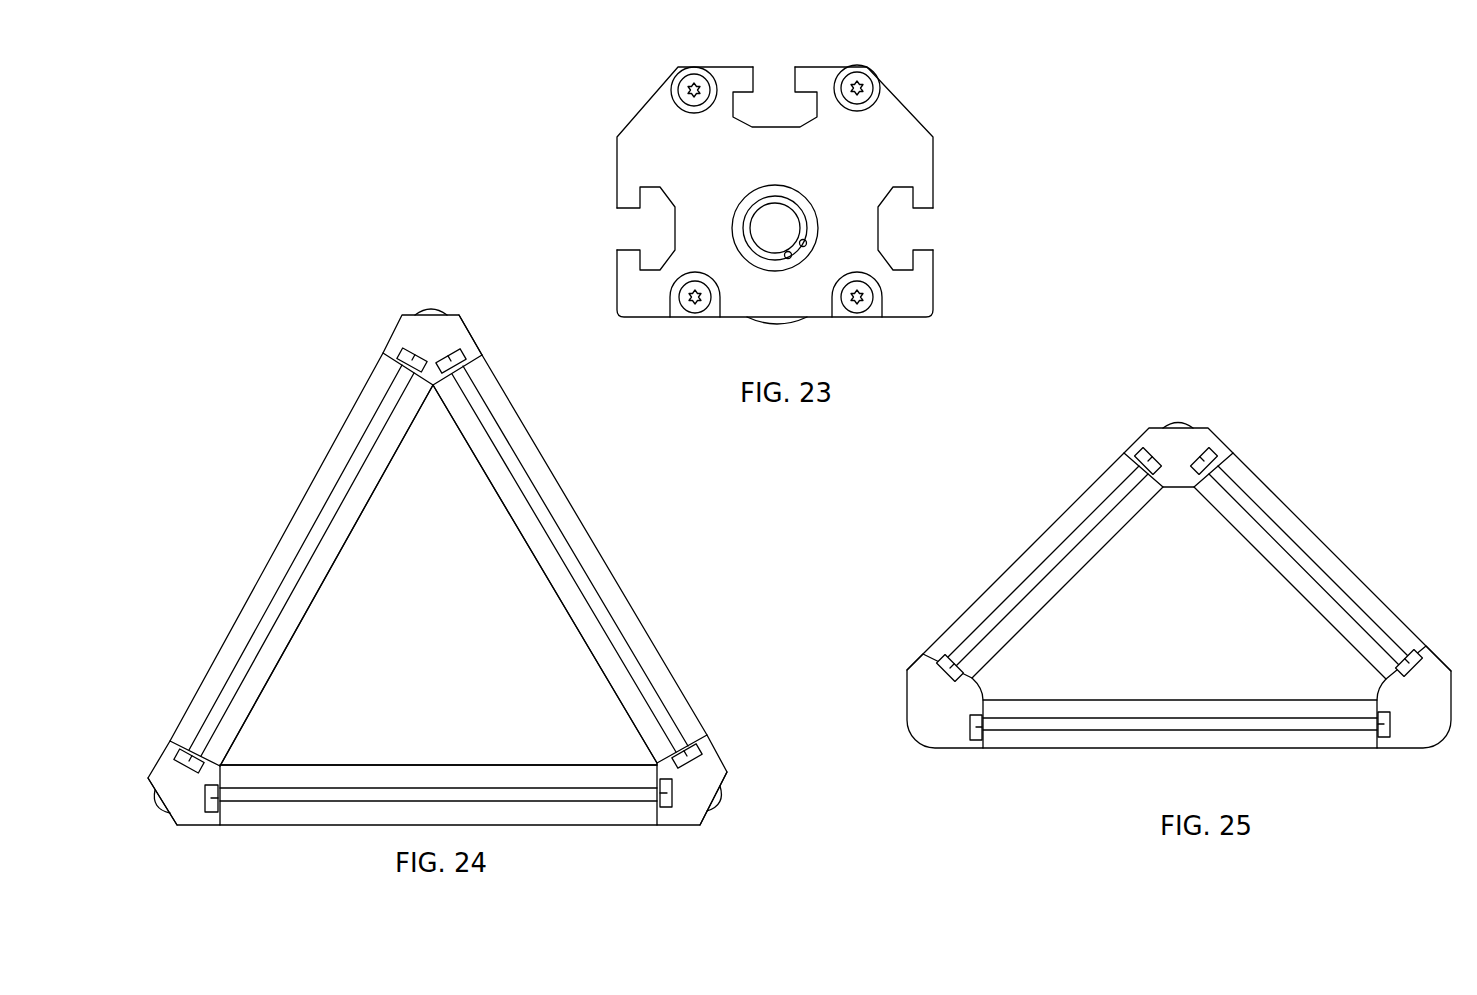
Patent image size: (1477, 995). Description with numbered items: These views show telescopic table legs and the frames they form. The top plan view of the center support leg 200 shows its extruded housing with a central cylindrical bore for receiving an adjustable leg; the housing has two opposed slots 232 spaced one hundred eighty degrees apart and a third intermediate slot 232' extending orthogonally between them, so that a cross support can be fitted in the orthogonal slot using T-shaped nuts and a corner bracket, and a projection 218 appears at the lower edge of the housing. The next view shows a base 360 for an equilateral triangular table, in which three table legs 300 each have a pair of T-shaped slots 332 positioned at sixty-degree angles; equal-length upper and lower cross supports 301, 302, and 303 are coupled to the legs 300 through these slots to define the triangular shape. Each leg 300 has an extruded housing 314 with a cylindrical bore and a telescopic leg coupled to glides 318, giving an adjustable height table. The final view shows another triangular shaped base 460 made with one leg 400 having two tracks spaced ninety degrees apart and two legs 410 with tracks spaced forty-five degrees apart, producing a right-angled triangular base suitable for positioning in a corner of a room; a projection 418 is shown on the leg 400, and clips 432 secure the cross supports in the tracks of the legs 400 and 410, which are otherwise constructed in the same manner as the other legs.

In FIG. 23, the center support leg 200 is at (930, 76).
In FIG. 23, the intermediate slot 232' is at (761, 76).
In FIG. 23, the slot 232 is at (770, 218).
In FIG. 23, the bottom protrusion 218 is at (775, 326).
In FIG. 24, the table leg 300 is at (478, 318).
In FIG. 24, the cross support 301 is at (308, 468).
In FIG. 24, the cross support 302 is at (574, 470).
In FIG. 24, the cross support 303 is at (548, 827).
In FIG. 24, the extruded housing 314 is at (477, 341).
In FIG. 24, the glide 318 is at (430, 310).
In FIG. 24, the T-shaped slot 332 is at (445, 358).
In FIG. 24, the base 360 is at (562, 442).
In FIG. 25, the leg 400 is at (1222, 428).
In FIG. 25, the leg 410 is at (1430, 640).
In FIG. 25, the connector protrusion 418 is at (1176, 422).
In FIG. 25, the retaining clip 432 is at (1202, 460).
In FIG. 25, the triangular shaped base 460 is at (1285, 474).